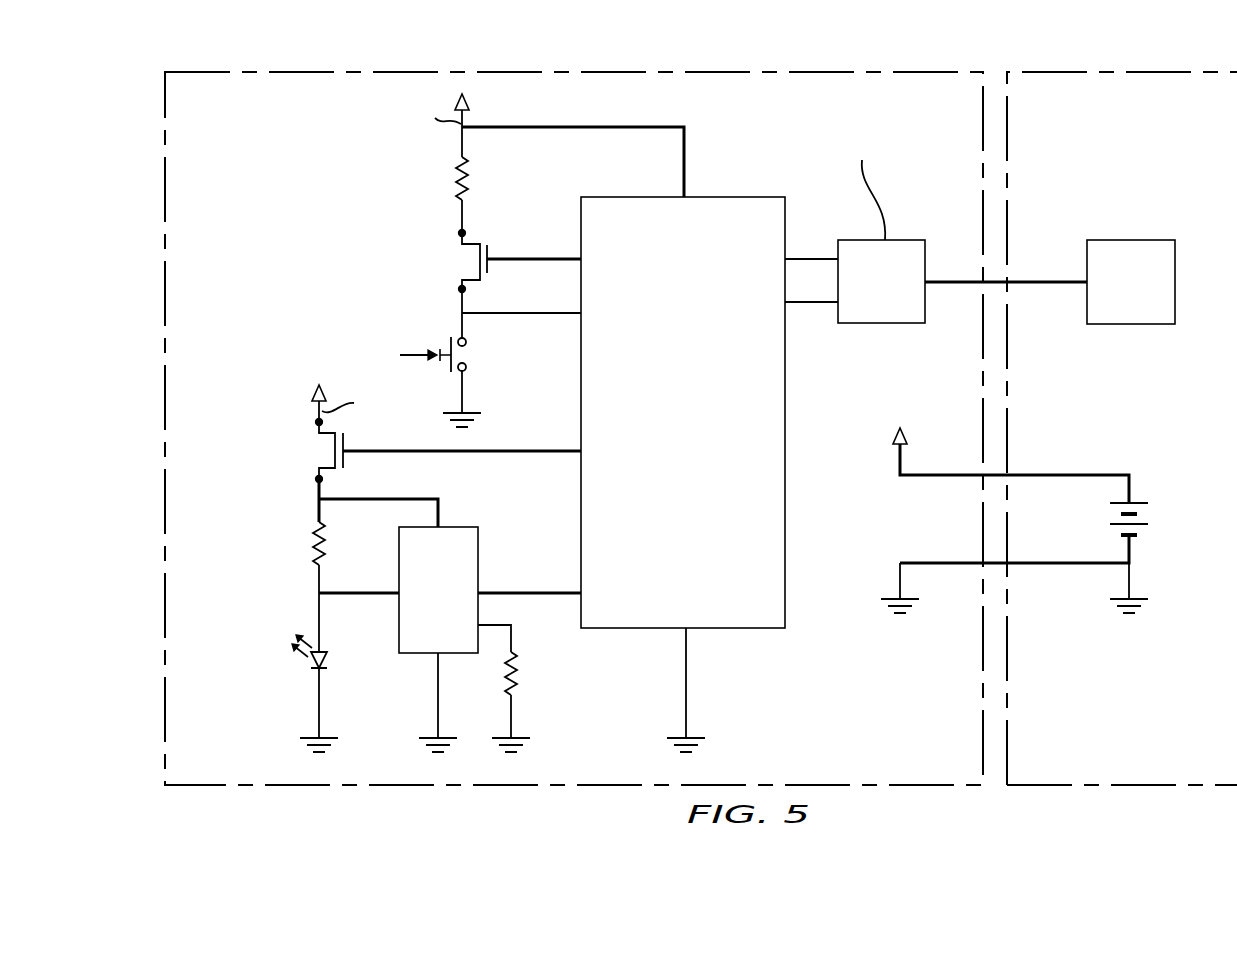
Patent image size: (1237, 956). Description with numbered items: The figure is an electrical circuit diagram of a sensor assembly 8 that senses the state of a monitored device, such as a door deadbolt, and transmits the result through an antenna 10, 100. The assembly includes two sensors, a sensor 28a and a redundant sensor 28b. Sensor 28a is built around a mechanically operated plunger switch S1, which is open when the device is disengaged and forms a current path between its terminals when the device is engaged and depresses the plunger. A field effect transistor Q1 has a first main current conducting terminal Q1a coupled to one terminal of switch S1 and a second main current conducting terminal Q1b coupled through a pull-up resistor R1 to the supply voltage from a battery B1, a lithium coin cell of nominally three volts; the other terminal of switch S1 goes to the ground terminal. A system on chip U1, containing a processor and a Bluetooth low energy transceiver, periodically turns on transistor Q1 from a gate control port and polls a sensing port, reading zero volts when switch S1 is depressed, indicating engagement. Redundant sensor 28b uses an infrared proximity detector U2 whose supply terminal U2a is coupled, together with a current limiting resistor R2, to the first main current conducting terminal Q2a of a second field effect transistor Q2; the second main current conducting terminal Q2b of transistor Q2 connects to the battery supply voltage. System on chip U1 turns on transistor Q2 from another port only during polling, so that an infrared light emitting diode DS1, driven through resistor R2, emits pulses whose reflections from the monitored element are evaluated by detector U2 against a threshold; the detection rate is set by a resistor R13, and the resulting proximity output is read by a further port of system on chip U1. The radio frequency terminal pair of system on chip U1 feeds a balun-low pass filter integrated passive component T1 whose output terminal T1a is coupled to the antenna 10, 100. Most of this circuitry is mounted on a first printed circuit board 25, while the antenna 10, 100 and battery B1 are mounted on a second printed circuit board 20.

The sensor assembly 8 is at (623, 47).
The first printed circuit board 25 is at (935, 700).
The second printed circuit board 20 is at (1162, 700).
The sensor 28a is at (260, 315).
The redundant sensor 28b is at (260, 762).
The antenna 10 is at (1139, 289).
The antenna 100 is at (1130, 326).
The pull-up resistor R1 is at (476, 178).
The current limiting resistor R2 is at (339, 543).
The resistor R13 is at (525, 688).
The field effect transistor Q1 is at (504, 261).
The first main current conducting terminal Q1a is at (459, 289).
The second main current conducting terminal Q1b is at (459, 233).
The field effect transistor Q2 is at (429, 456).
The first main current conducting terminal Q2a is at (316, 479).
The second main current conducting terminal Q2b is at (316, 422).
The plunger switch S1 is at (452, 354).
The system on chip U1 is at (683, 474).
The infrared proximity detector U2 is at (438, 639).
The supply terminal U2a is at (440, 526).
The integrated passive component T1 is at (860, 226).
The output terminal T1a is at (925, 282).
The infrared light emitting diode DS1 is at (279, 671).
The battery B1 is at (1138, 535).